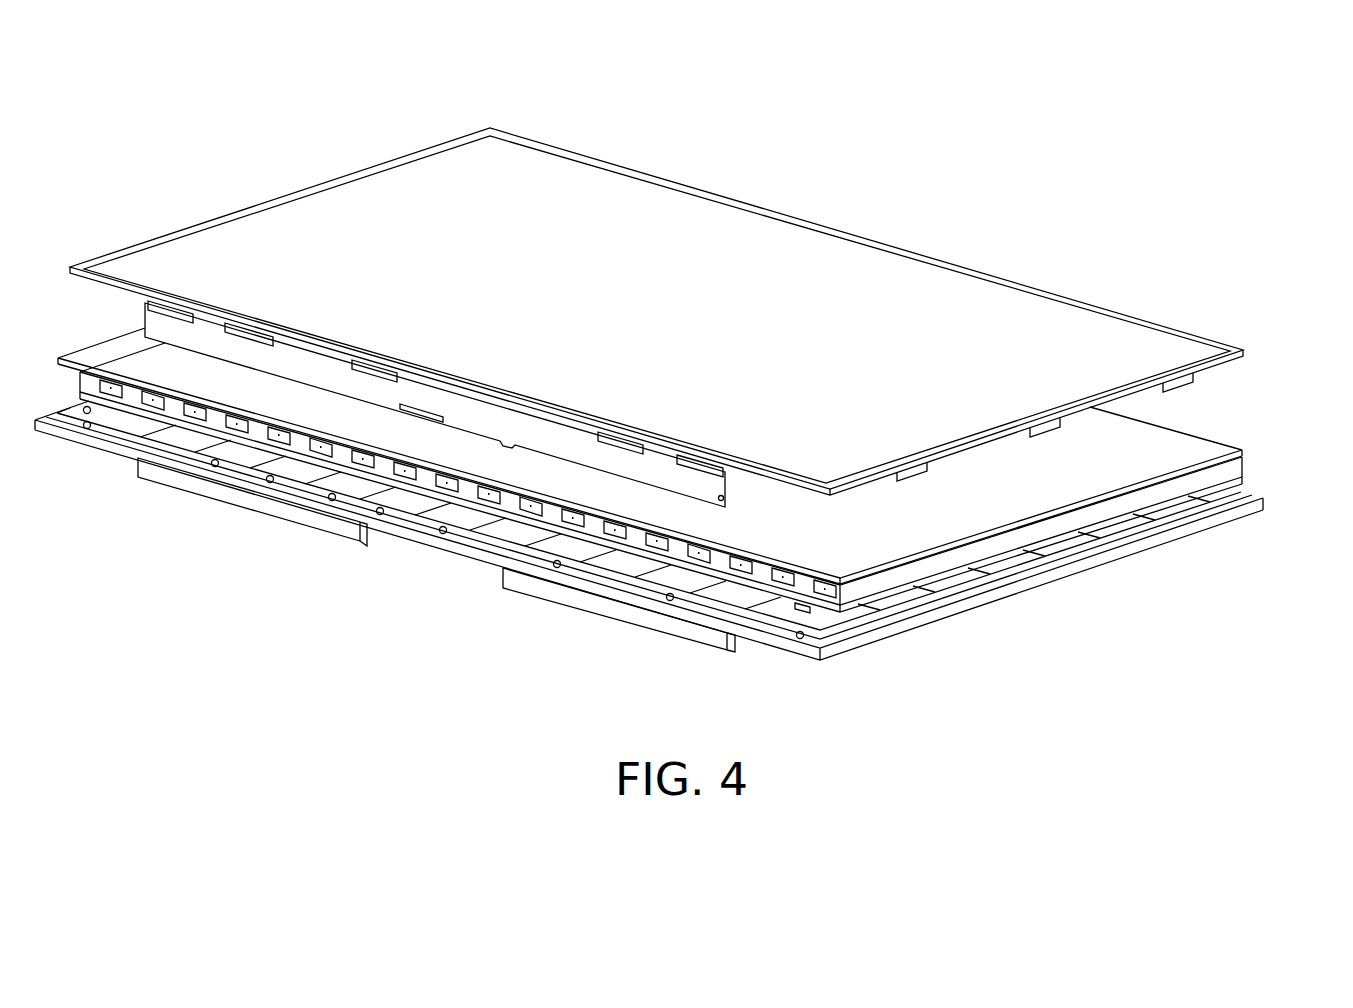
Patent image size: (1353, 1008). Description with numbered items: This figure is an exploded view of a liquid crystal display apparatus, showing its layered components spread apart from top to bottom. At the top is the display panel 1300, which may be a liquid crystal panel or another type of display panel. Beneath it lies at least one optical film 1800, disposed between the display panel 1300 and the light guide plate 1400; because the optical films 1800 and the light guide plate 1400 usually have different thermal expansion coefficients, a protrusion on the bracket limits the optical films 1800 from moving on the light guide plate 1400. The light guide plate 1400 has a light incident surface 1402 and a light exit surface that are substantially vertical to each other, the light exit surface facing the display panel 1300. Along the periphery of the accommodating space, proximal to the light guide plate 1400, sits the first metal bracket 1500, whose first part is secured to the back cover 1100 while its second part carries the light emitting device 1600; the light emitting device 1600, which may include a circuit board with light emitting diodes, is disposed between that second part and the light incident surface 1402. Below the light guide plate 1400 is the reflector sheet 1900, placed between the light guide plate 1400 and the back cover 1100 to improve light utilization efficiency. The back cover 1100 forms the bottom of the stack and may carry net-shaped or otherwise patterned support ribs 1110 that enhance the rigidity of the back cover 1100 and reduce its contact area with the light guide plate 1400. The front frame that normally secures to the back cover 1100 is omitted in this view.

The back cover 1100 is at (649, 540).
The support ribs 1110 is at (1113, 530).
The display panel 1300 is at (1243, 352).
The light guide plate 1400 is at (711, 541).
The light incident surface 1402 is at (800, 607).
The first metal bracket 1500 is at (850, 597).
The light emitting device 1600 is at (873, 583).
The optical film 1800 is at (1243, 452).
The reflector sheet 1900 is at (1243, 478).